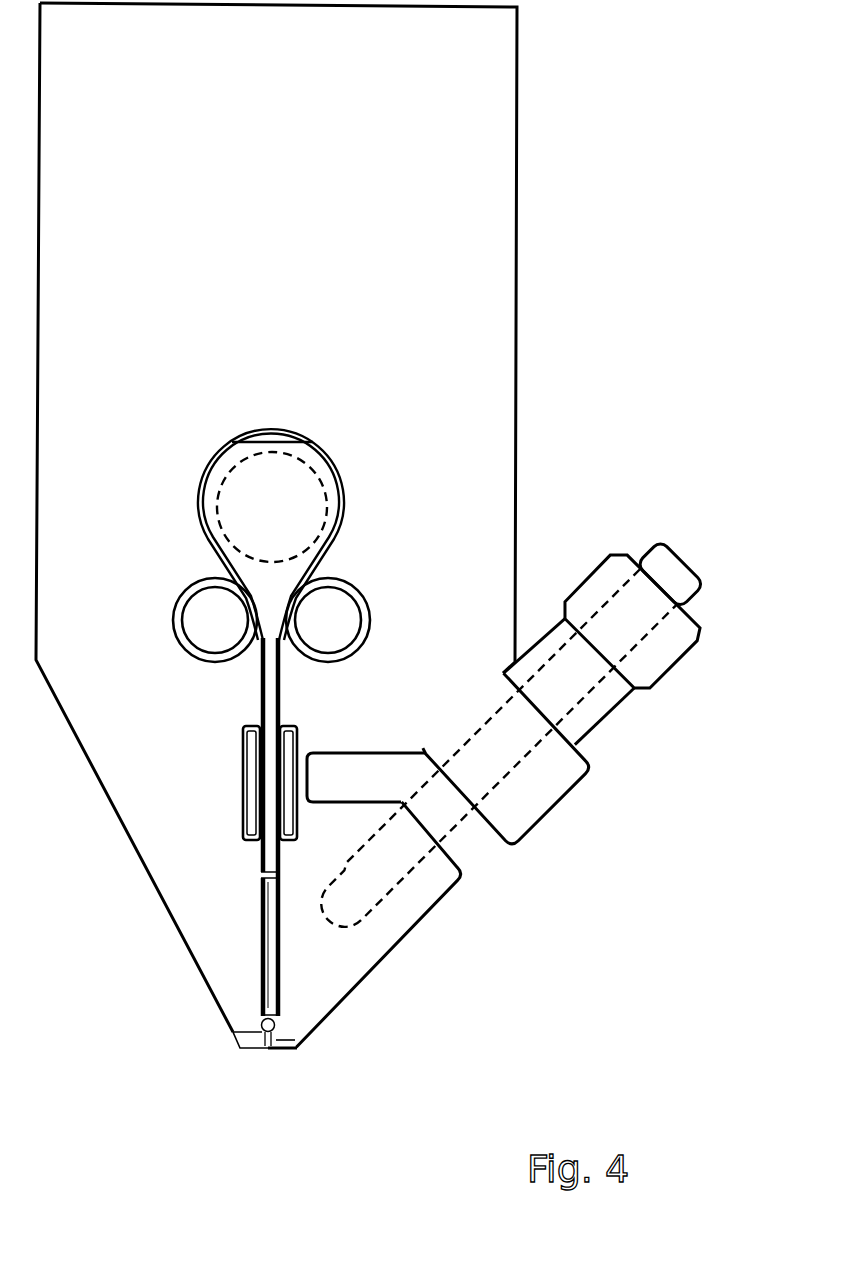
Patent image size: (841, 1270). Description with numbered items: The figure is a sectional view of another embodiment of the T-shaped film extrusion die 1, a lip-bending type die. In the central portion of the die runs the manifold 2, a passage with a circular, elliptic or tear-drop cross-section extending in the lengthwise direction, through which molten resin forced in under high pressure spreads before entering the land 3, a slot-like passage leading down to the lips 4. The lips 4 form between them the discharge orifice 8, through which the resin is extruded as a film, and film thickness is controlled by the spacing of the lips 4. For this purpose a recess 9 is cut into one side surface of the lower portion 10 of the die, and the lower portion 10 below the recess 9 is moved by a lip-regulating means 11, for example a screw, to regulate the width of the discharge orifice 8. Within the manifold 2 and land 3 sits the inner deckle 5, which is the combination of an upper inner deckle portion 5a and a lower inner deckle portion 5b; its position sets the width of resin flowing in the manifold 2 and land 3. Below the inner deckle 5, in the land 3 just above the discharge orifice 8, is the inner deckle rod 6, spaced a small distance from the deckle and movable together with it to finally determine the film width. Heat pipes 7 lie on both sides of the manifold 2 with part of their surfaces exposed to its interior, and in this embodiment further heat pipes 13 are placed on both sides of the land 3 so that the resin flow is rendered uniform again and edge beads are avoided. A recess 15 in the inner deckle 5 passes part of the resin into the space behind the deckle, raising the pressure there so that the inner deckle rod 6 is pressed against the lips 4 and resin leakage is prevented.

The T-shaped film extrusion die 1 is at (530, 133).
The manifold 2 is at (347, 497).
The land 3 is at (273, 684).
The lips 4 is at (297, 1037).
The inner deckle 5 is at (193, 827).
The upper inner deckle portion 5a is at (272, 687).
The lower inner deckle portion 5b is at (264, 895).
The inner deckle rod 6 is at (232, 1034).
The heat pipe 7 is at (340, 620).
The discharge orifice 8 is at (268, 1048).
The recess 9 is at (357, 778).
The lower portion 10 is at (307, 968).
The lip-regulating means 11 is at (628, 632).
The heat pipe 13 is at (288, 744).
The recess 15 is at (273, 437).